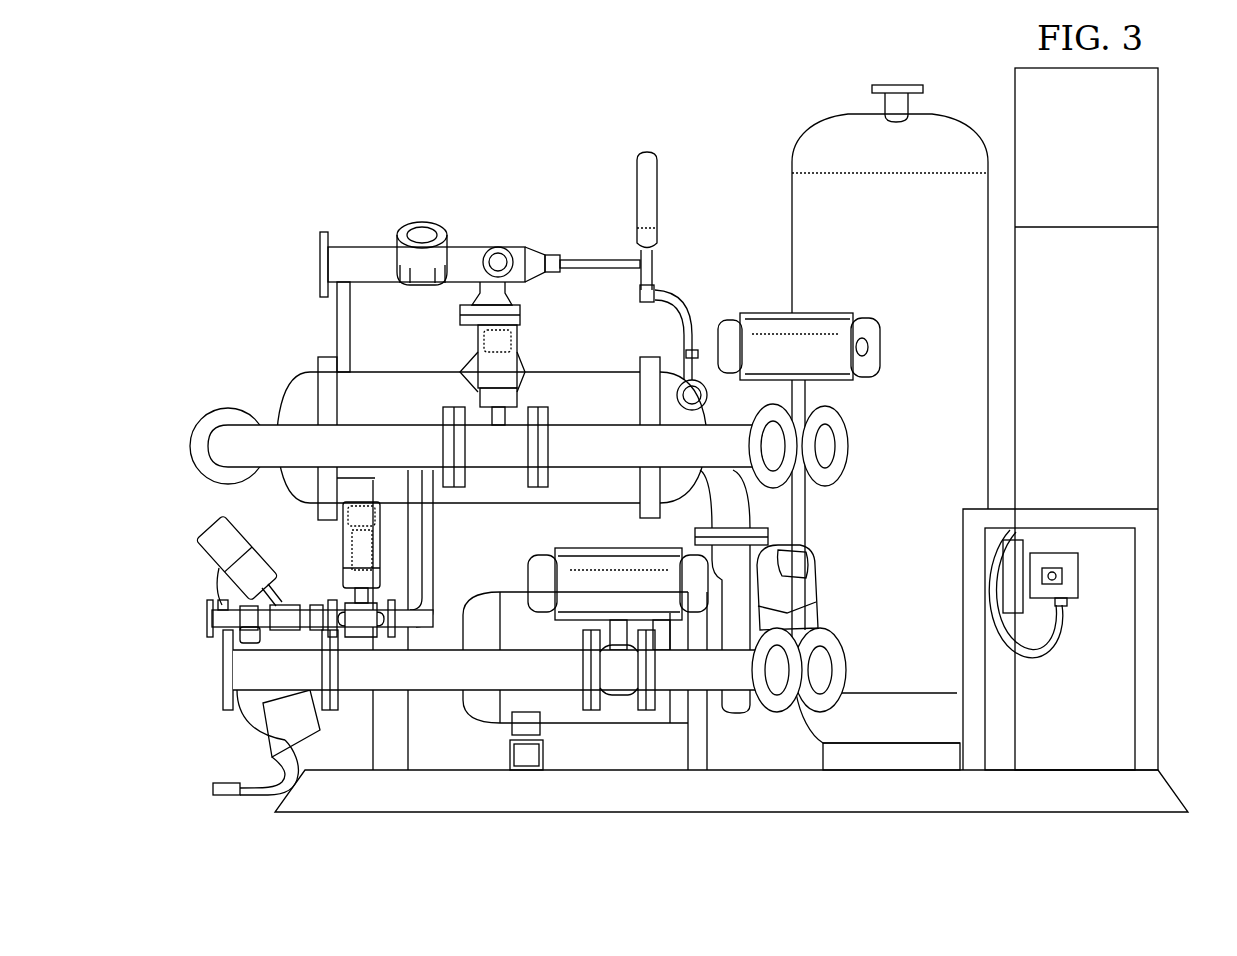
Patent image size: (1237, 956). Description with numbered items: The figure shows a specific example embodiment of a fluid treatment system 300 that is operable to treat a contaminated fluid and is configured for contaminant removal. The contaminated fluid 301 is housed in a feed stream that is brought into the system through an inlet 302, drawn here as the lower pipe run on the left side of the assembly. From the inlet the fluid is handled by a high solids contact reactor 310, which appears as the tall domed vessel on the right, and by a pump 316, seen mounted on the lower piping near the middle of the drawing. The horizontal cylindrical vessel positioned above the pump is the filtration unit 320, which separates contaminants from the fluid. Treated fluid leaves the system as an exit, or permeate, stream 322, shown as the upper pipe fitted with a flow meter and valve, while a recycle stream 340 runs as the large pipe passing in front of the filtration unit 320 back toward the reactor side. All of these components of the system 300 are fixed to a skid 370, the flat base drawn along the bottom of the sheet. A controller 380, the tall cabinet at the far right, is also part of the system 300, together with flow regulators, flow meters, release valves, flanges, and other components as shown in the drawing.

The fluid treatment system 300 is at (236, 97).
The contaminated fluid 301 is at (247, 718).
The inlet 302 is at (452, 692).
The high solids contact reactor 310 is at (975, 108).
The pump 316 is at (490, 592).
The filtration unit 320 is at (300, 372).
The exit (permeate) stream 322 is at (375, 247).
The recycle stream 340 is at (270, 425).
The skid 370 is at (1183, 797).
The controller 380 is at (1106, 303).